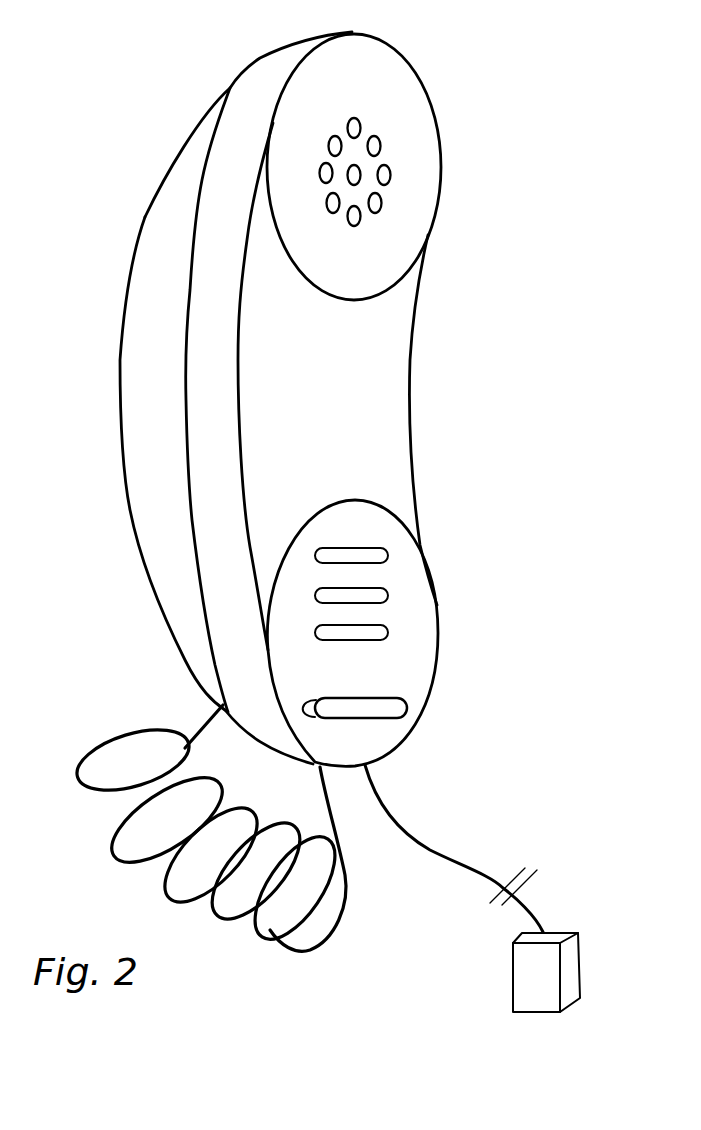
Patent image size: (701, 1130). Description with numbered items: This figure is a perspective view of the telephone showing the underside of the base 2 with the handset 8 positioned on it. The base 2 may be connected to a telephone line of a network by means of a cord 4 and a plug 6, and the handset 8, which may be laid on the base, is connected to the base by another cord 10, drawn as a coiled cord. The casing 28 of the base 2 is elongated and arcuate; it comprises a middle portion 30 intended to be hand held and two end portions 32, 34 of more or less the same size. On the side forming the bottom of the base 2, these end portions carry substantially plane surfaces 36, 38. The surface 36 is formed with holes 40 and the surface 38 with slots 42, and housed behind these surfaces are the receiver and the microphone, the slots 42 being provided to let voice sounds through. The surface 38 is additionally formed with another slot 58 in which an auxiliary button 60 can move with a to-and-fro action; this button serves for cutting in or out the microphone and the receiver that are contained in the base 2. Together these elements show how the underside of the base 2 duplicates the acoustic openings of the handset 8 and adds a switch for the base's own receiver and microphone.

The base 2 is at (428, 406).
The cord 4 is at (443, 858).
The plug 6 is at (528, 987).
The handset 8 is at (120, 394).
The cord 10 is at (107, 743).
The casing 28 is at (208, 445).
The middle portion 30 is at (338, 372).
The end portion 32 is at (258, 90).
The end portion 34 is at (287, 750).
The plane surface 36 is at (412, 177).
The plane surface 38 is at (380, 663).
The holes 40 is at (362, 128).
The slots 42 is at (388, 632).
The slot 58 is at (367, 712).
The auxiliary button 60 is at (380, 710).